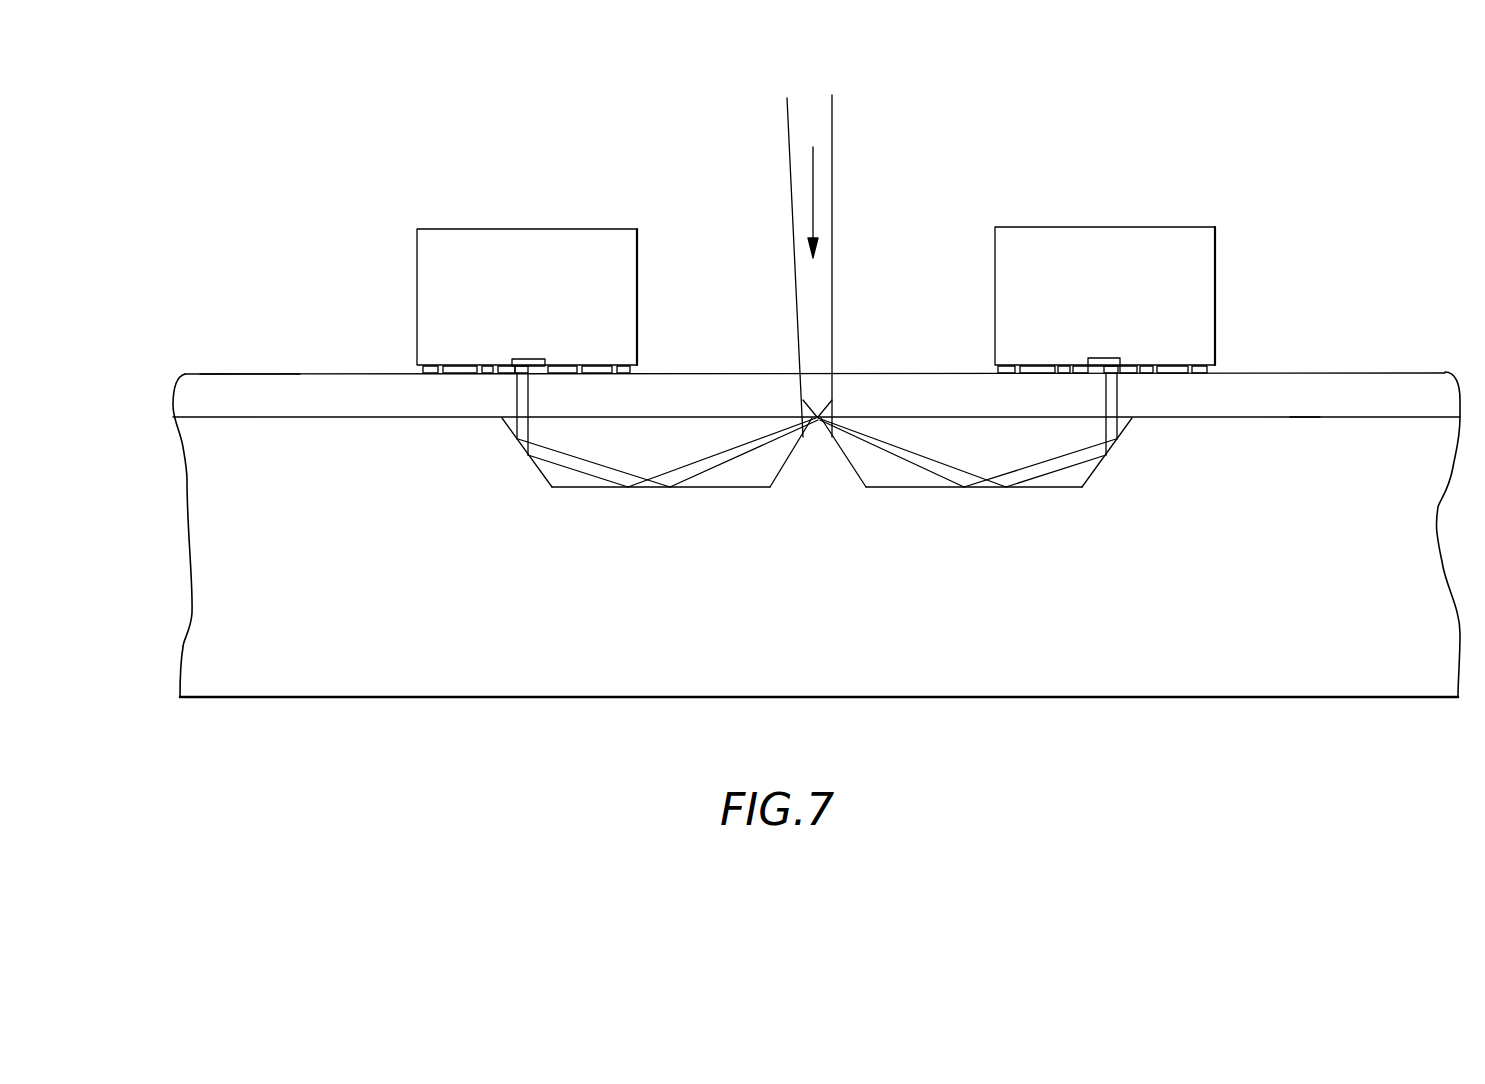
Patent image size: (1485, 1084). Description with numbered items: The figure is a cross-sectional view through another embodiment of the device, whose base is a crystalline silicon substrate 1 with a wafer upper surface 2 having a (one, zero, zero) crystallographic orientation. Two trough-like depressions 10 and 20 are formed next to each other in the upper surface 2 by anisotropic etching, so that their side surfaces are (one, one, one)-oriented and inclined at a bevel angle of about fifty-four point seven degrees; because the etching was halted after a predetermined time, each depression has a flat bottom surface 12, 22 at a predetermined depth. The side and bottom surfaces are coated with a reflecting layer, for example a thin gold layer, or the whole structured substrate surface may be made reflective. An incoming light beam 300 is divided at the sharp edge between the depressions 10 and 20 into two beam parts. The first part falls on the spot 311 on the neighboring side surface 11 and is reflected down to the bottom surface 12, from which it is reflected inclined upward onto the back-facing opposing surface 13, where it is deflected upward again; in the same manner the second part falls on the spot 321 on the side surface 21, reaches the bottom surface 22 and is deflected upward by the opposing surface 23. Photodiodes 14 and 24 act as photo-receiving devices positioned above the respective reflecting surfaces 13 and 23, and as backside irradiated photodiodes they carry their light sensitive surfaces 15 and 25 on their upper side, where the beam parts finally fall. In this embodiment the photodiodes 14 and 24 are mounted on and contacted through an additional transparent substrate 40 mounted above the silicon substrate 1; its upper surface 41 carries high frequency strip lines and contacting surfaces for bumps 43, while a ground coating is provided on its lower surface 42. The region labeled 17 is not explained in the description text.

The silicon substrate 1 is at (1403, 602).
The wafer upper surface 2 is at (1302, 415).
The trough-like depression 10 is at (660, 437).
The side surface 11 is at (782, 467).
The bottom surface 12 is at (654, 485).
The opposing surface 13 is at (530, 452).
The photodiode 14 is at (547, 305).
The light sensitive surface 15 is at (533, 362).
The mounting region 17 is at (270, 322).
The trough-like depression 20 is at (975, 434).
The side surface 21 is at (852, 470).
The bottom surface 22 is at (990, 485).
The opposing surface 23 is at (1118, 440).
The photodiode 24 is at (1178, 313).
The light sensitive surface 25 is at (1106, 356).
The transparent substrate 40 is at (816, 388).
The upper surface 41 is at (1387, 372).
The lower surface 42 is at (1354, 420).
The bumps 43 is at (421, 371).
The light beam 300 is at (822, 135).
The spot 311 is at (817, 417).
The spot 321 is at (820, 417).